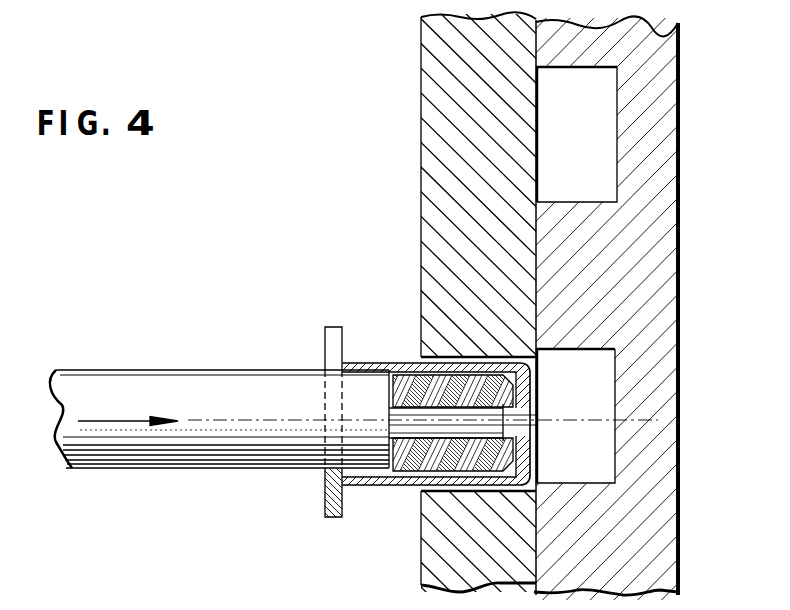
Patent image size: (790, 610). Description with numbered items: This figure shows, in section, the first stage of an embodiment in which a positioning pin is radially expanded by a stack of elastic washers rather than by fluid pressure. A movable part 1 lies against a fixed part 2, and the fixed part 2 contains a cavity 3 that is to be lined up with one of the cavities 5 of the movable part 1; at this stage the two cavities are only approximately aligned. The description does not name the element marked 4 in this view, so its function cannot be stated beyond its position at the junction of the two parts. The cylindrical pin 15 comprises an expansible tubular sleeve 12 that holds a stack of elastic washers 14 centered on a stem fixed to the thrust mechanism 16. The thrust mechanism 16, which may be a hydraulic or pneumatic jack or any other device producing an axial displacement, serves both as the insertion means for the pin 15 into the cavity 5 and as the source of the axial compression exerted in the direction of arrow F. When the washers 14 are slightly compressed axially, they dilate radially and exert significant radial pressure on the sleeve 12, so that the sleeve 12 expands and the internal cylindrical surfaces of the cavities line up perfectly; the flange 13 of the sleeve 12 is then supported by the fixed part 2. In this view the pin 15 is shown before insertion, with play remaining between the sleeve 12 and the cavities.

The movable part 1 is at (680, 53).
The fixed part 2 is at (420, 93).
The cavity 3 is at (417, 487).
The inner block 4 is at (535, 257).
The cavity 5 is at (617, 147).
The expansible tubular sleeve 12 is at (373, 483).
The flange 13 is at (333, 337).
The elastic washers 14 is at (417, 380).
The pin 15 is at (265, 352).
The thrust mechanism 16 is at (117, 380).